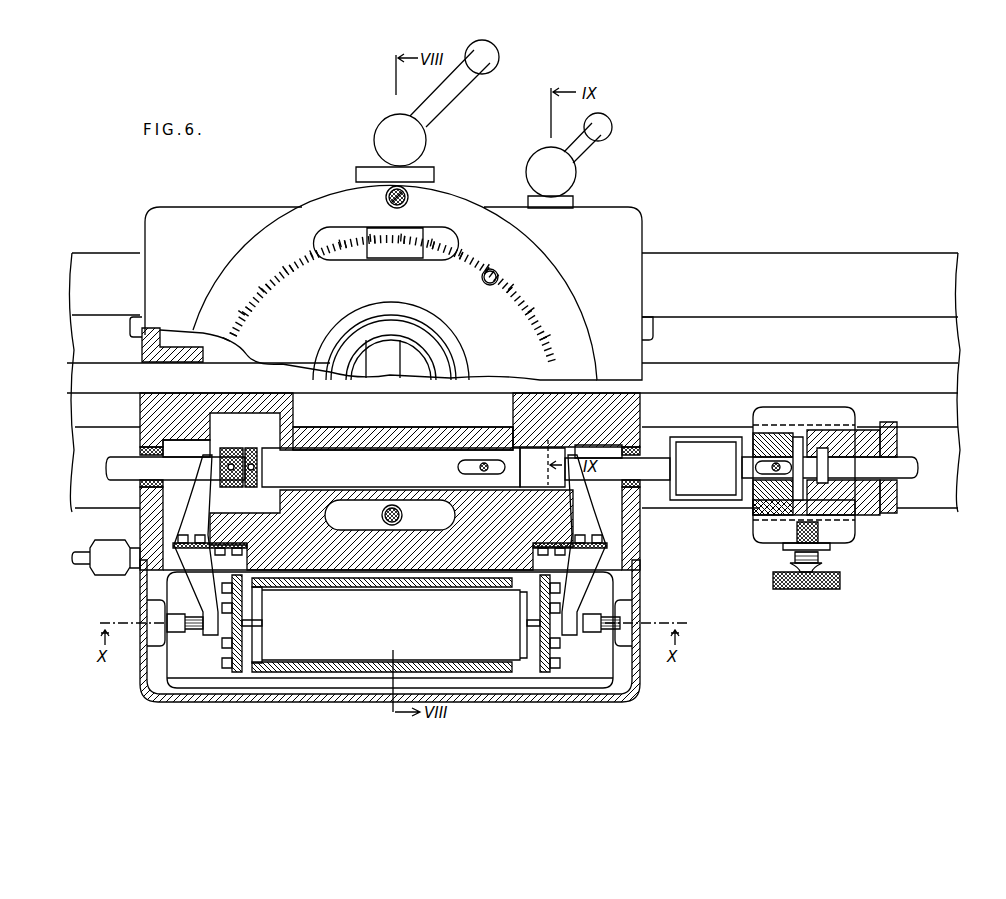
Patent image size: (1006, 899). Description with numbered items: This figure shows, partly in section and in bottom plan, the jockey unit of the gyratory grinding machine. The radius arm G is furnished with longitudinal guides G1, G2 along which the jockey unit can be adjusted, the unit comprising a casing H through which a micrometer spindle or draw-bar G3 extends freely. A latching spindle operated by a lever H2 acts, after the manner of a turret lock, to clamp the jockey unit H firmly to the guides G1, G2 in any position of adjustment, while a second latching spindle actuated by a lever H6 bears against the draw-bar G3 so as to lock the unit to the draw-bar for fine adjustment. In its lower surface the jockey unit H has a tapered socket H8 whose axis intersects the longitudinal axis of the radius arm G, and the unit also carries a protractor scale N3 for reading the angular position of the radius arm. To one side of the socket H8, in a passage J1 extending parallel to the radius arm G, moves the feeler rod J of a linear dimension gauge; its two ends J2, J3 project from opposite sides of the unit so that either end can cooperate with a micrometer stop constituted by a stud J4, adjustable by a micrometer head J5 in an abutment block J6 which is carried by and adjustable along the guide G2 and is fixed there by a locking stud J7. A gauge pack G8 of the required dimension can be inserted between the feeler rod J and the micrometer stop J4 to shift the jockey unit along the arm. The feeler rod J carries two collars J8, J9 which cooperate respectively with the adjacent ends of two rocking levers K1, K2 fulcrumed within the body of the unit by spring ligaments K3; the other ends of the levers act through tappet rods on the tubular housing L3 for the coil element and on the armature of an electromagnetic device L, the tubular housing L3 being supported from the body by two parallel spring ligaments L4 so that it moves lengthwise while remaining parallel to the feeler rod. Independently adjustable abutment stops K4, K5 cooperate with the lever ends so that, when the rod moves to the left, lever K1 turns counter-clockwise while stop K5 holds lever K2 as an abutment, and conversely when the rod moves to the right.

The radius arm G is at (915, 345).
The longitudinal guide G1 is at (800, 285).
The longitudinal guide G2 is at (915, 498).
The micrometer spindle or draw-bar G3 is at (912, 384).
The gauge pack G8 is at (706, 468).
The jockey unit H is at (610, 257).
The lever H2 is at (487, 55).
The lever H6 is at (600, 137).
The tapered socket H8 is at (425, 343).
The protractor scale N3 is at (425, 210).
The feeler rod J is at (292, 465).
The passage J1 is at (437, 445).
The end of feeler rod J2 is at (127, 465).
The end of feeler rod J3 is at (660, 467).
The micrometer stop stud J4 is at (750, 455).
The micrometer head J5 is at (897, 450).
The abutment block J6 is at (795, 418).
The locking stud J7 is at (842, 581).
The radial flange or collar J8 is at (215, 446).
The radial flange or collar J9 is at (593, 393).
The rocking lever K1 is at (190, 518).
The rocking lever K2 is at (592, 513).
The spring ligament K3 is at (600, 548).
The abutment stop K4 is at (180, 635).
The abutment stop K5 is at (600, 638).
The electromagnetic device L is at (345, 650).
The tubular housing L3 is at (470, 672).
The spring ligament L4 is at (546, 672).